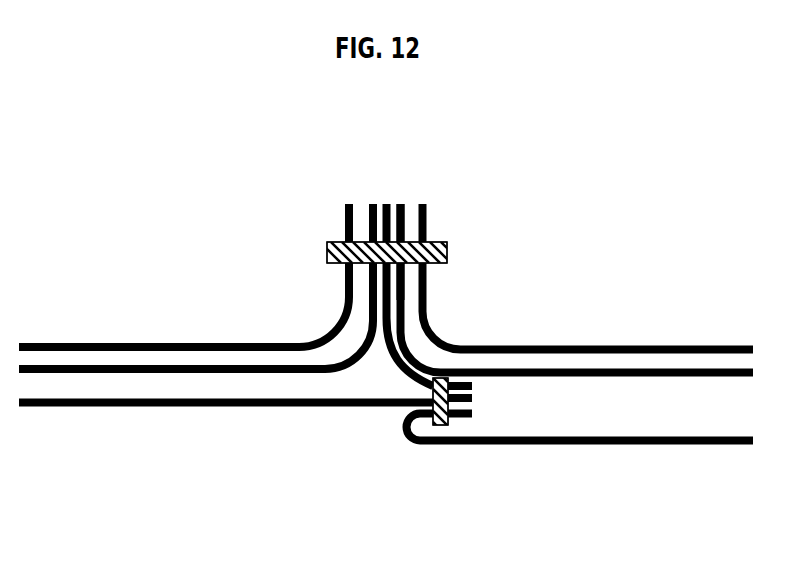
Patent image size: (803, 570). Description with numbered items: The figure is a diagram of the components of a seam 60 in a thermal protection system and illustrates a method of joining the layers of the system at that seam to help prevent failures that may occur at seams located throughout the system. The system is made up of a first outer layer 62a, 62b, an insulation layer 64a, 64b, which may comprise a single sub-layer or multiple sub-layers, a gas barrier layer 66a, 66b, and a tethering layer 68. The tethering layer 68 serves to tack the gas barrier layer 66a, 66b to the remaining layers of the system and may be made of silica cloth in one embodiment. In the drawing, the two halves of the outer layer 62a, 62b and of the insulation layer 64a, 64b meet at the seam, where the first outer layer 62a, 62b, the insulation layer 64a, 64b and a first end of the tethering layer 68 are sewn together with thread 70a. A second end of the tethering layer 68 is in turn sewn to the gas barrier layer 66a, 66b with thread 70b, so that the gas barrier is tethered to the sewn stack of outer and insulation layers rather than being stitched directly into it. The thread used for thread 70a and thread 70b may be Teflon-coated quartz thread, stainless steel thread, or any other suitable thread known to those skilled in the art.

The seam 60 is at (303, 292).
The first outer layer 62a is at (210, 342).
The first outer layer 62b is at (593, 342).
The insulation layer 64a is at (372, 203).
The insulation layer 64b is at (402, 204).
The gas barrier layer 66a is at (143, 407).
The gas barrier layer 66b is at (521, 447).
The tethering layer 68 is at (386, 203).
The thread 70a is at (448, 245).
The thread 70b is at (452, 431).